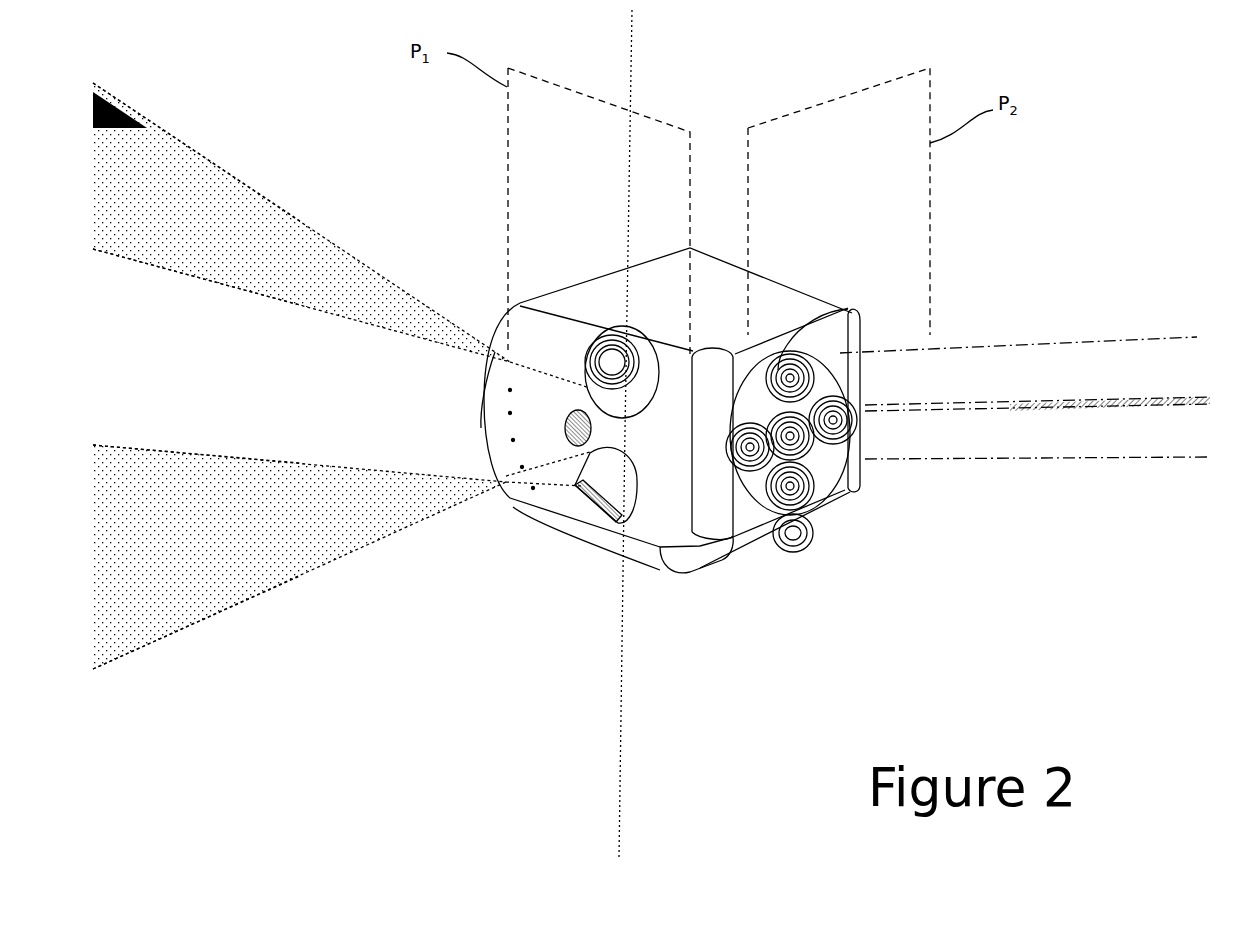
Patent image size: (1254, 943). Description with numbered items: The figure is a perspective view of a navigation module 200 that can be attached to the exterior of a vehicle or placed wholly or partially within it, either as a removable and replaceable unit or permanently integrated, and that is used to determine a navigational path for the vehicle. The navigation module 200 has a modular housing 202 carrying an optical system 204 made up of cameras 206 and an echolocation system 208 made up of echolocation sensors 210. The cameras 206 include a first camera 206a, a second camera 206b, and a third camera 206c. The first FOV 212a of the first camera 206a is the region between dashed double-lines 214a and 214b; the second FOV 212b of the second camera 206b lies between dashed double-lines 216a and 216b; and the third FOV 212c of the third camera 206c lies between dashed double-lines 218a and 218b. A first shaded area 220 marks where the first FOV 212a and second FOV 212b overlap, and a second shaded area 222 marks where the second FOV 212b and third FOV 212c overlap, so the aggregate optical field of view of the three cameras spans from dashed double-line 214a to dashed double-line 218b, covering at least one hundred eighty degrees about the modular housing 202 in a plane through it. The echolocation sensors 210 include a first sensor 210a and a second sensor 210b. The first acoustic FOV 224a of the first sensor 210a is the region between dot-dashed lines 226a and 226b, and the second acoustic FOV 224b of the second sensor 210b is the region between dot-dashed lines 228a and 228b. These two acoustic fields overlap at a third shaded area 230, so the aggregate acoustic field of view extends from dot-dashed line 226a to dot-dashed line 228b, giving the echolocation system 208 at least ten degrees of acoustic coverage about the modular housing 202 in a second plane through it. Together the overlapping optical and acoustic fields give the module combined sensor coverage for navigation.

The navigation module 200 is at (712, 212).
The modular housing 202 is at (700, 557).
The optical system 204 is at (647, 432).
The cameras 206 is at (793, 540).
The first camera 206a is at (596, 336).
The second camera 206b is at (565, 428).
The third camera 206c is at (590, 500).
The echolocation system 208 is at (846, 482).
The echolocation sensors 210 is at (787, 520).
The first sensor 210a is at (848, 309).
The second sensor 210b is at (753, 335).
The first FOV 212a is at (482, 164).
The second FOV 212b is at (290, 392).
The third FOV 212c is at (480, 697).
The dashed double-line 214a is at (633, 75).
The dashed double-line 214b is at (170, 271).
The dashed double-line 216a is at (193, 152).
The dashed double-line 216b is at (172, 634).
The dashed double-line 218a is at (152, 449).
The dashed double-line 218b is at (622, 790).
The first shaded area 220 is at (235, 240).
The second shaded area 222 is at (225, 537).
The first acoustic FOV 224a is at (1018, 385).
The second acoustic FOV 224b is at (1018, 441).
The dot-dashed line 226a is at (1072, 343).
The dot-dashed line 226b is at (1150, 410).
The dot-dashed line 228a is at (1100, 393).
The dot-dashed line 228b is at (1145, 461).
The third shaded area 230 is at (1200, 396).